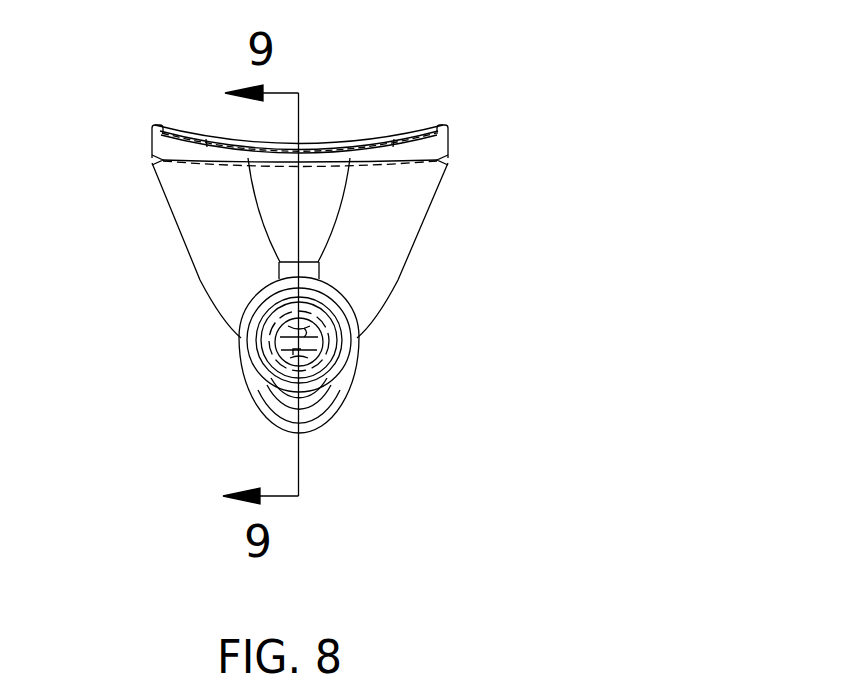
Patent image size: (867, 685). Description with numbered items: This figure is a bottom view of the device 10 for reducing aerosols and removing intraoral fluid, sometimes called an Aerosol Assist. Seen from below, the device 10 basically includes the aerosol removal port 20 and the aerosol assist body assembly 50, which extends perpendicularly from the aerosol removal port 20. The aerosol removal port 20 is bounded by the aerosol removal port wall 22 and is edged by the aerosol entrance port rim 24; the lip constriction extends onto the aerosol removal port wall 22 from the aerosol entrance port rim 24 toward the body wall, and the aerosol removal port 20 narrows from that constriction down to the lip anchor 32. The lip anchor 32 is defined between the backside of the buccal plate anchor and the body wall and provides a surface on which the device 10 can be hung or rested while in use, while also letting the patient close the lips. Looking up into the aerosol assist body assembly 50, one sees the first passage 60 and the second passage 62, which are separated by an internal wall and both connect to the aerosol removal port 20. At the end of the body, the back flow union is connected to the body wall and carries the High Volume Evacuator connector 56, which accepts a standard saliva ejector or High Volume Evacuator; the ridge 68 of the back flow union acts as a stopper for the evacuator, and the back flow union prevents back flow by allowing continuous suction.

The device for reducing aerosols and removing intraoral fluid 10 is at (552, 143).
The aerosol removal port 20 is at (127, 152).
The aerosol removal port wall 22 is at (177, 233).
The aerosol entrance port rim 24 is at (430, 132).
The lip anchor 32 is at (328, 223).
The aerosol assist body assembly 50 is at (212, 432).
The High Volume Evacuator connector 56 is at (340, 367).
The first passage 60 is at (278, 365).
The second passage 62 is at (275, 337).
The ridge 68 is at (360, 343).